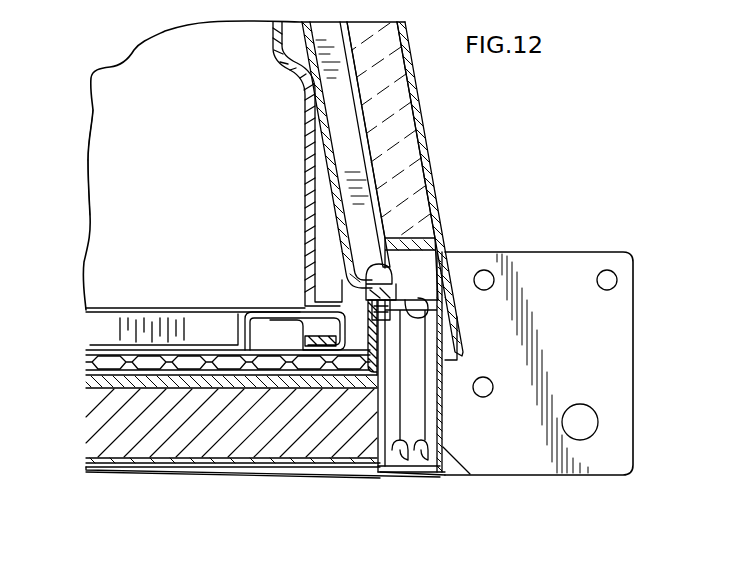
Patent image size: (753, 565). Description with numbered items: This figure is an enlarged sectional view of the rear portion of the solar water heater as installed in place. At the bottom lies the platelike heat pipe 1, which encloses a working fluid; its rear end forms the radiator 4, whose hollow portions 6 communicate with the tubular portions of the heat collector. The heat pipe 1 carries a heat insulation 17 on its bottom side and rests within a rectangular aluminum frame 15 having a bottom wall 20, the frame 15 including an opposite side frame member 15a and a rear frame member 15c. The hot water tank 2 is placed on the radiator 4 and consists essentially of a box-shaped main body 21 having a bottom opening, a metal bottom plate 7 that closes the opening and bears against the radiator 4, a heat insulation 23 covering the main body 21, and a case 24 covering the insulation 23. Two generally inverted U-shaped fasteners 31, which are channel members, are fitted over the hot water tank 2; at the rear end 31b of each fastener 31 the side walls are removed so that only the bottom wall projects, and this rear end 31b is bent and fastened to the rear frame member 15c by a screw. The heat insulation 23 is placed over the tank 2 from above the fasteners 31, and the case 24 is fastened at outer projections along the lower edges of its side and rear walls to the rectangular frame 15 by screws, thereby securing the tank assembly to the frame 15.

The heat pipe 1 is at (232, 362).
The hot water tank 2 is at (96, 149).
The radiator 4 is at (122, 362).
The hollow portions 6 is at (183, 362).
The metal bottom plate 7 is at (150, 310).
The rectangular frame 15 is at (158, 470).
The side frame member 15a is at (255, 477).
The rear frame member 15c is at (443, 450).
The heat insulation 17 is at (121, 445).
The bottom wall 20 is at (205, 468).
The main body 21 is at (100, 200).
The heat insulation 23 is at (385, 122).
The case 24 is at (430, 150).
The fastener 31 is at (340, 97).
The rear end 31b is at (390, 283).